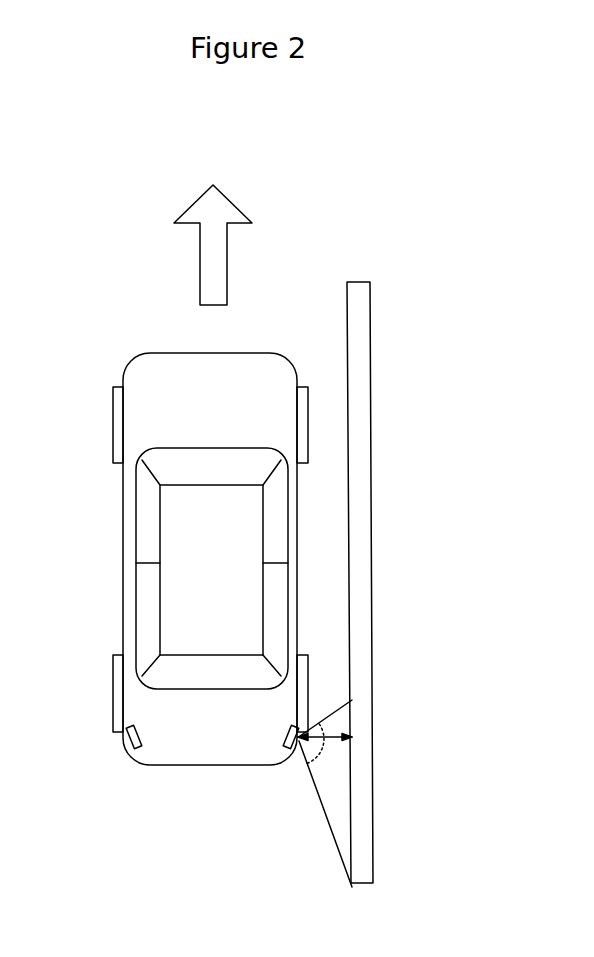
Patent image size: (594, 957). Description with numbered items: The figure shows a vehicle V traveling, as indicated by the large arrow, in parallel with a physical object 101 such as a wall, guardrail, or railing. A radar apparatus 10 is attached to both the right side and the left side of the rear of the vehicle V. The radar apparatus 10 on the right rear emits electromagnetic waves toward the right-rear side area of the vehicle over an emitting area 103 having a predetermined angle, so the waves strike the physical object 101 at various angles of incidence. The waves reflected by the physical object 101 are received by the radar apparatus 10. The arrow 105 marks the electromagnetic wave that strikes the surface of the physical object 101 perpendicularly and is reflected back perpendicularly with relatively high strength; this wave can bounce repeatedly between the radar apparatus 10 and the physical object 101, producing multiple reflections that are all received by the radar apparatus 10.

The vehicle V is at (212, 353).
The radar apparatus 10 is at (127, 742).
The physical object 101 is at (368, 367).
The emitting area 103 is at (322, 720).
The arrow 105 is at (337, 745).